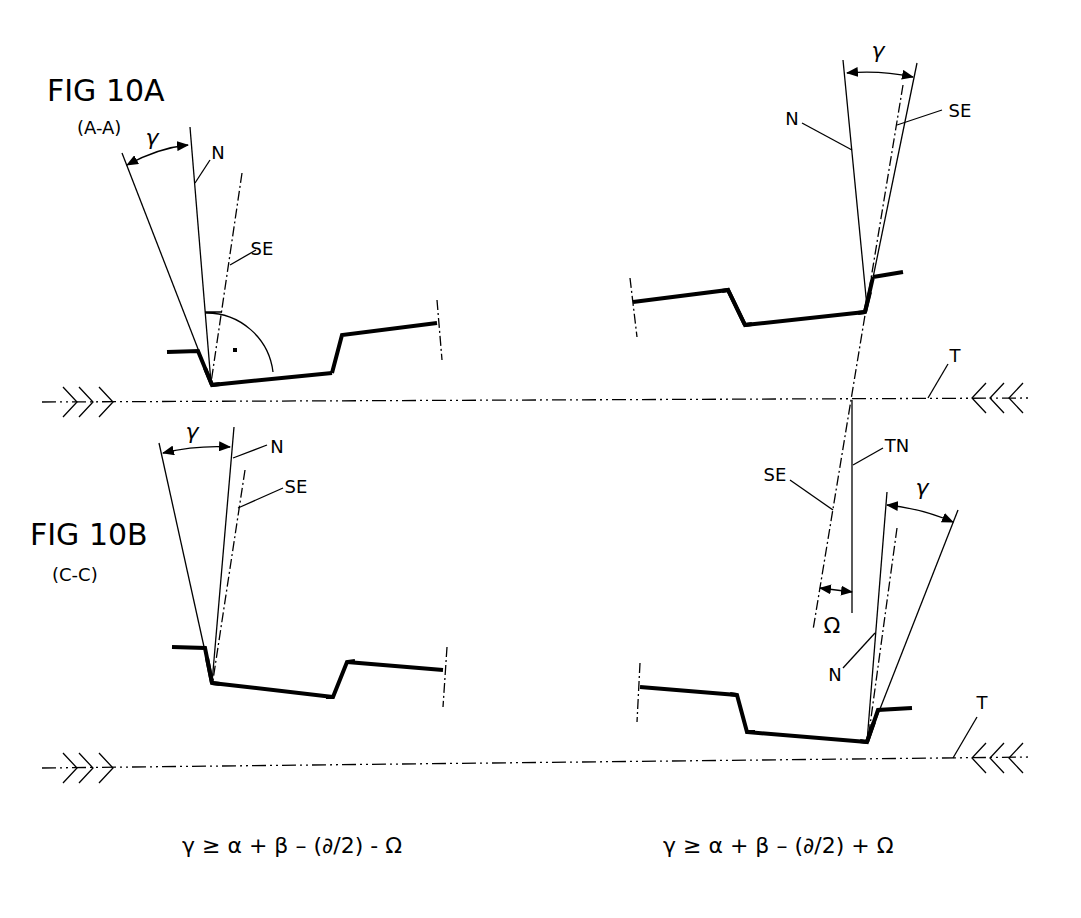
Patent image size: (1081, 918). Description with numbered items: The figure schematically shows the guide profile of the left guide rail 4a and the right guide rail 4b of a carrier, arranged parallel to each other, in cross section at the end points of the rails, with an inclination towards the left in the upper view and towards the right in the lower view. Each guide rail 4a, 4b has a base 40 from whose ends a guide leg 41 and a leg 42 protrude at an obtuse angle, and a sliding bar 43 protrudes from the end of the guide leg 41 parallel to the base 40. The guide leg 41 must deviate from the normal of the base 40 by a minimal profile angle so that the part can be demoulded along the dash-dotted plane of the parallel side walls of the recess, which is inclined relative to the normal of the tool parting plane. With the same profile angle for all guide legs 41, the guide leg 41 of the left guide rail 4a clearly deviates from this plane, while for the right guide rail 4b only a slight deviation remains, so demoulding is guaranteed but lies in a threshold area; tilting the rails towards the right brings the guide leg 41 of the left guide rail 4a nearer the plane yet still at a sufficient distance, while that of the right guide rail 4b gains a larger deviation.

In FIG. 10A, the base 40 is at (302, 378).
In FIG. 10B, the base 40 is at (278, 696).
In FIG. 10A, the guide leg 41 is at (198, 368).
In FIG. 10B, the guide leg 41 is at (205, 672).
In FIG. 10A, the leg 42 is at (735, 307).
In FIG. 10B, the leg 42 is at (342, 683).
In FIG. 10A, the sliding bar 43 is at (173, 348).
In FIG. 10B, the sliding bar 43 is at (175, 643).
In FIG. 10A, the left guide rail 4a is at (388, 322).
In FIG. 10B, the left guide rail 4a is at (368, 657).
In FIG. 10A, the right guide rail 4b is at (682, 290).
In FIG. 10B, the right guide rail 4b is at (670, 683).